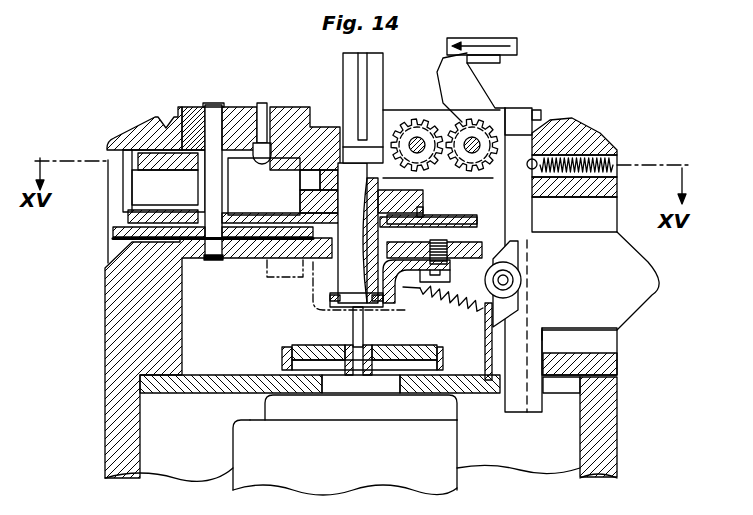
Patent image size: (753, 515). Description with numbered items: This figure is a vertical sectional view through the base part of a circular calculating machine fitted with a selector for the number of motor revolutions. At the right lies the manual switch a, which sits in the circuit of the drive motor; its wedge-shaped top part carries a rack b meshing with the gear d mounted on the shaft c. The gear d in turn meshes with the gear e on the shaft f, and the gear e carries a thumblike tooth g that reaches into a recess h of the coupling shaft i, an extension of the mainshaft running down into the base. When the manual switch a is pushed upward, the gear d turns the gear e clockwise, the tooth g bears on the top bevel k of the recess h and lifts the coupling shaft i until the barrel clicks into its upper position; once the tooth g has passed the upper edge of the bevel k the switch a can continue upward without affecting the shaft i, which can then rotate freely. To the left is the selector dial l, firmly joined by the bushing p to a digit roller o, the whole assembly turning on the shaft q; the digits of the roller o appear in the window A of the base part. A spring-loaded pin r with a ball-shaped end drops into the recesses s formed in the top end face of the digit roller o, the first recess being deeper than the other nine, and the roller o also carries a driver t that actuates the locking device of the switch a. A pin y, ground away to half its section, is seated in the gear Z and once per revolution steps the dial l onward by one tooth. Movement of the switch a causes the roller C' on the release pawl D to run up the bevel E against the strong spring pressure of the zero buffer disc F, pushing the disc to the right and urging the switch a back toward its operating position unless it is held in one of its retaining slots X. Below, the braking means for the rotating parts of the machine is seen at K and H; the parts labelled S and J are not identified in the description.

The housing cover S is at (157, 158).
The spring-loaded pin r is at (250, 126).
The driver t is at (268, 100).
The recess h is at (322, 153).
The top bevel k is at (338, 133).
The thumblike tooth g is at (378, 155).
The gear e is at (407, 128).
The shaft f is at (417, 137).
The gear d is at (470, 140).
The zero buffer disc F is at (518, 43).
The release pawl D is at (477, 90).
The shaft c is at (507, 120).
The rack b is at (531, 122).
The retaining slot X is at (572, 136).
The digit roller o is at (145, 185).
The bushing p is at (200, 190).
The recesses s is at (264, 186).
The window A is at (120, 212).
The selector dial l is at (110, 242).
The shaft q is at (214, 259).
The coupling shaft i is at (347, 278).
The gear Z is at (458, 217).
The pin y is at (447, 241).
The bevel E is at (505, 258).
The roller C' is at (525, 280).
The manual switch a is at (637, 268).
The braking means H is at (437, 348).
The braking means K is at (282, 357).
The bushing J is at (492, 357).